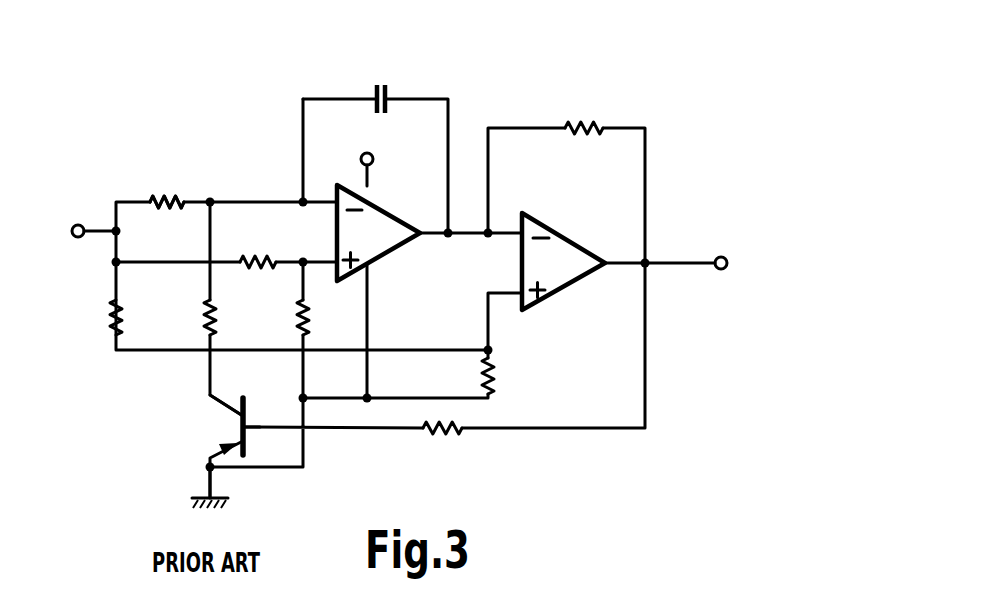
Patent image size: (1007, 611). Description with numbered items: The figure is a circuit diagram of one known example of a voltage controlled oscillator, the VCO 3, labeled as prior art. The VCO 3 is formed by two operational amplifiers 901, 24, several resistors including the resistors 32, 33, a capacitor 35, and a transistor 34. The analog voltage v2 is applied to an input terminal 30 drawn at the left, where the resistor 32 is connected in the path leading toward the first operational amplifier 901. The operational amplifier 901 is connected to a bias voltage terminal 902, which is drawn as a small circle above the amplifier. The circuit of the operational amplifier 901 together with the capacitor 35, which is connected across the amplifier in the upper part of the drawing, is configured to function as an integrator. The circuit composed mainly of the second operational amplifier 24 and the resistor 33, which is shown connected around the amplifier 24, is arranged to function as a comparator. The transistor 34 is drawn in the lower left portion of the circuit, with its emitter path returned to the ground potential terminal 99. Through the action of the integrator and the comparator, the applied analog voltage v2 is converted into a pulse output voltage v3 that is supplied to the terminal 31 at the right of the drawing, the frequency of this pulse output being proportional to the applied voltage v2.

The VCO 3 is at (528, 455).
The operational amplifier 24 is at (555, 233).
The input terminal 30 is at (78, 238).
The terminal 31 is at (721, 272).
The resistor 32 is at (172, 199).
The resistor 33 is at (590, 117).
The transistor 34 is at (243, 398).
The capacitor 35 is at (387, 92).
The ground potential terminal 99 is at (192, 498).
The operational amplifier 901 is at (398, 238).
The bias voltage terminal 902 is at (362, 155).